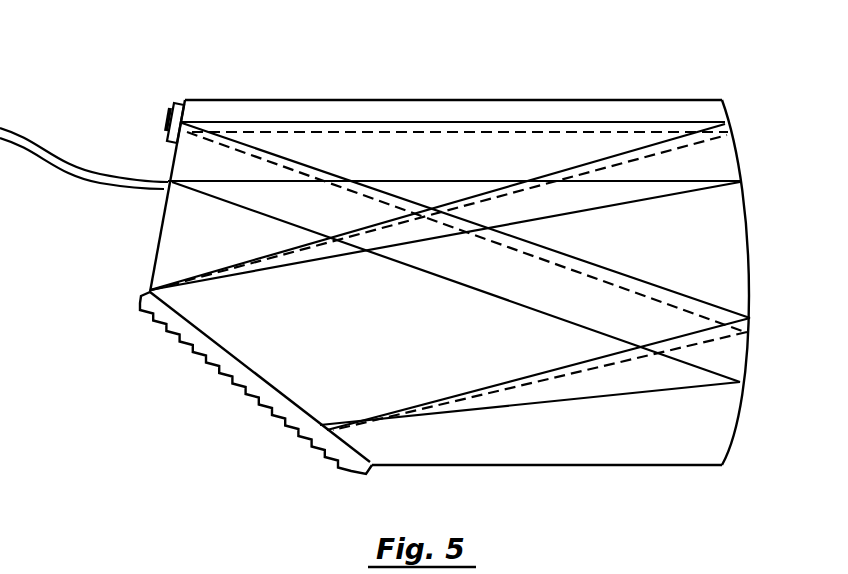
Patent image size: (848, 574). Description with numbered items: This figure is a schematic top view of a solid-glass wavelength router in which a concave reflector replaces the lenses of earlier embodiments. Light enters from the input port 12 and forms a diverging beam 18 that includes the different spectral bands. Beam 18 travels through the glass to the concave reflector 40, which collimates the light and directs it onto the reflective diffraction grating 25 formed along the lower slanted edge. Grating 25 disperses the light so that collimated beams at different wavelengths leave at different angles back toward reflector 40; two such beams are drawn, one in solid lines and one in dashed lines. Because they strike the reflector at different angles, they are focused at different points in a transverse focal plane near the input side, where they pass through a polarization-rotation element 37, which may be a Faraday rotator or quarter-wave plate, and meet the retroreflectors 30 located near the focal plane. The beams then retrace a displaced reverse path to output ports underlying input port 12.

The input port 12 is at (166, 184).
The diverging beam 18 is at (203, 175).
The reflective diffraction grating 25 is at (250, 389).
The retroreflectors 30 is at (166, 120).
The polarization-rotation element 37 is at (184, 101).
The concave reflector 40 is at (742, 160).